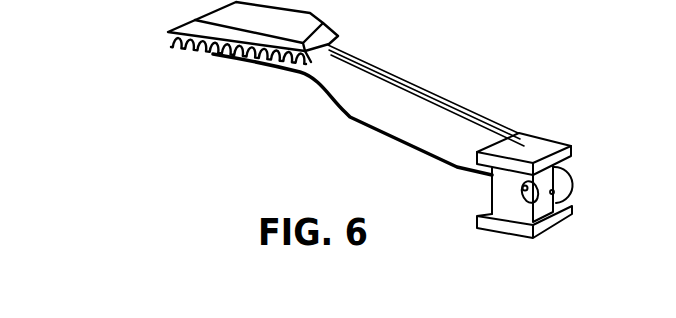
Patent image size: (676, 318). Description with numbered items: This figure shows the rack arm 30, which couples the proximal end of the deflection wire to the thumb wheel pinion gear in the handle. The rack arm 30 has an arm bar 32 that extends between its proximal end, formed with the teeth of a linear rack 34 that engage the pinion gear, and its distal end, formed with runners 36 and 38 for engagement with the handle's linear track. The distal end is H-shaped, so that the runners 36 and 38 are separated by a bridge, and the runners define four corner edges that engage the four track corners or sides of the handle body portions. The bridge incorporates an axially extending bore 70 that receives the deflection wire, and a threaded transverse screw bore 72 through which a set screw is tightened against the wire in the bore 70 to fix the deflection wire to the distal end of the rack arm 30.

The rack arm 30 is at (464, 62).
The arm bar 32 is at (366, 88).
The linear rack 34 is at (243, 58).
The runner 36 is at (576, 143).
The runner 38 is at (560, 227).
The axially extending bore 70 is at (563, 198).
The threaded transverse screw bore 72 is at (572, 171).